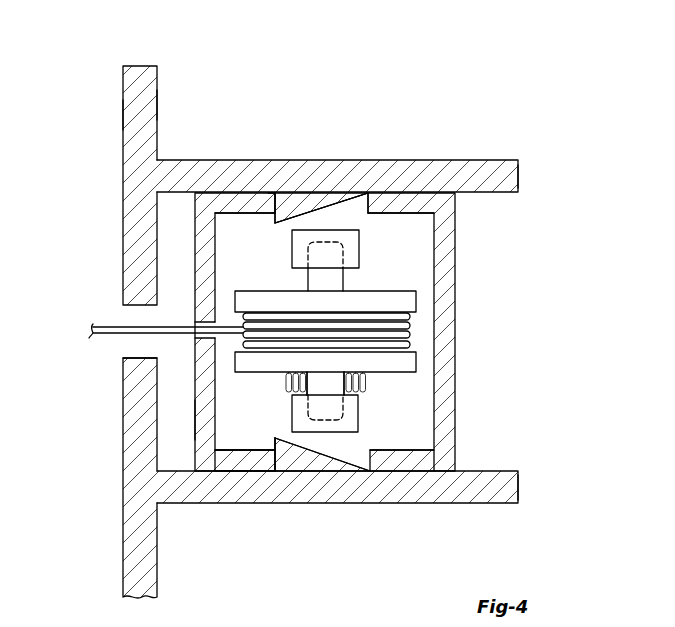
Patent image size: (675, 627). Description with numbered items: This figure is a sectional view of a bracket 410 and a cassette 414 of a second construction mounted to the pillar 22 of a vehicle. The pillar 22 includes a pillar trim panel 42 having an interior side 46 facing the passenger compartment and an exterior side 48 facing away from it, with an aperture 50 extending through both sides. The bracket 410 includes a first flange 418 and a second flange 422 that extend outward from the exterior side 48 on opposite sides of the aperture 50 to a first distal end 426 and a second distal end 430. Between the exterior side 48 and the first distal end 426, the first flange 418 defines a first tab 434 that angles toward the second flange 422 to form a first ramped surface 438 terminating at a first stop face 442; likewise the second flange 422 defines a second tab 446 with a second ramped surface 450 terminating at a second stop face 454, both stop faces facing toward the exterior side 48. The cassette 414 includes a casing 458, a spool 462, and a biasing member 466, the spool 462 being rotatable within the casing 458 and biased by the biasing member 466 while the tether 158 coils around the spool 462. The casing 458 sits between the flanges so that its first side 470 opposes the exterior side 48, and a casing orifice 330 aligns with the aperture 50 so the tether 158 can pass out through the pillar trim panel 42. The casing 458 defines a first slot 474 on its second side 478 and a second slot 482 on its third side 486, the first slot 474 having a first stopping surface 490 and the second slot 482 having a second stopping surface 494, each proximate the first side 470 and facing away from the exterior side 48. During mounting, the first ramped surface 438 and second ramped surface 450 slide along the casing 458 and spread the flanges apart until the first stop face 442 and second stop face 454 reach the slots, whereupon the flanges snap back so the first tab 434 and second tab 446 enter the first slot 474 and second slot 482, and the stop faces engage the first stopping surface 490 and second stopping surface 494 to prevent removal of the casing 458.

The pillar 22 is at (312, 309).
The pillar trim panel 42 is at (290, 309).
The interior side 46 is at (123, 115).
The exterior side 48 is at (158, 103).
The aperture 50 is at (139, 357).
The tether 158 is at (170, 340).
The casing orifice 330 is at (200, 322).
The bracket 410 is at (324, 335).
The cassette 414 is at (309, 335).
The first flange 418 is at (378, 148).
The second flange 422 is at (375, 513).
The first distal end 426 is at (518, 175).
The second distal end 430 is at (519, 486).
The first tab 434 is at (290, 205).
The first ramped surface 438 is at (312, 210).
The first stop face 442 is at (270, 198).
The second tab 446 is at (302, 458).
The second ramped surface 450 is at (318, 455).
The second stop face 454 is at (272, 452).
The casing 458 is at (456, 297).
The spool 462 is at (420, 361).
The biasing member 466 is at (370, 382).
The first side 470 is at (193, 432).
The first slot 474 is at (345, 210).
The second side 478 is at (408, 205).
The second slot 482 is at (362, 432).
The third side 486 is at (402, 460).
The first stopping surface 490 is at (278, 216).
The second stopping surface 494 is at (262, 465).